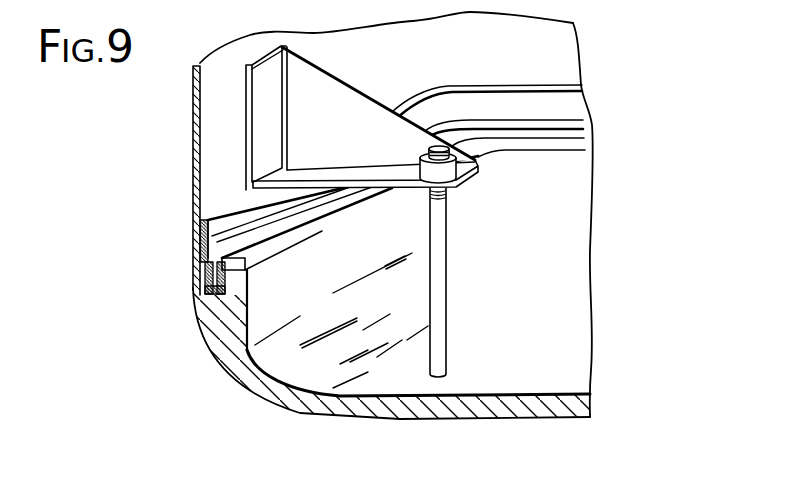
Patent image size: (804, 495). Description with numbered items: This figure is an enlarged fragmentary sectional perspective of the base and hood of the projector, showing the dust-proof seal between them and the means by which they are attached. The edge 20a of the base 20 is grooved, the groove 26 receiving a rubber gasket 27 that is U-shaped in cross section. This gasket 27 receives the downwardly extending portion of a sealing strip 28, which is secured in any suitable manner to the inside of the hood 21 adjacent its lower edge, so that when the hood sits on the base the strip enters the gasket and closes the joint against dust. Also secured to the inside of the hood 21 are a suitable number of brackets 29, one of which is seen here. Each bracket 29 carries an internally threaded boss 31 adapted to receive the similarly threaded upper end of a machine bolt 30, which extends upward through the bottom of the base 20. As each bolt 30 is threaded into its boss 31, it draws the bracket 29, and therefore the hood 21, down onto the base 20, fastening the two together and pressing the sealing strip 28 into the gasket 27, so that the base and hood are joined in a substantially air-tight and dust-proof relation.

The base 20 is at (301, 413).
The edge of base 20a is at (277, 242).
The hood 21 is at (193, 148).
The groove 26 is at (246, 305).
The rubber gasket 27 is at (205, 284).
The sealing strip 28 is at (215, 237).
The bracket 29 is at (346, 91).
The machine bolt 30 is at (437, 222).
The internally threaded boss 31 is at (420, 163).